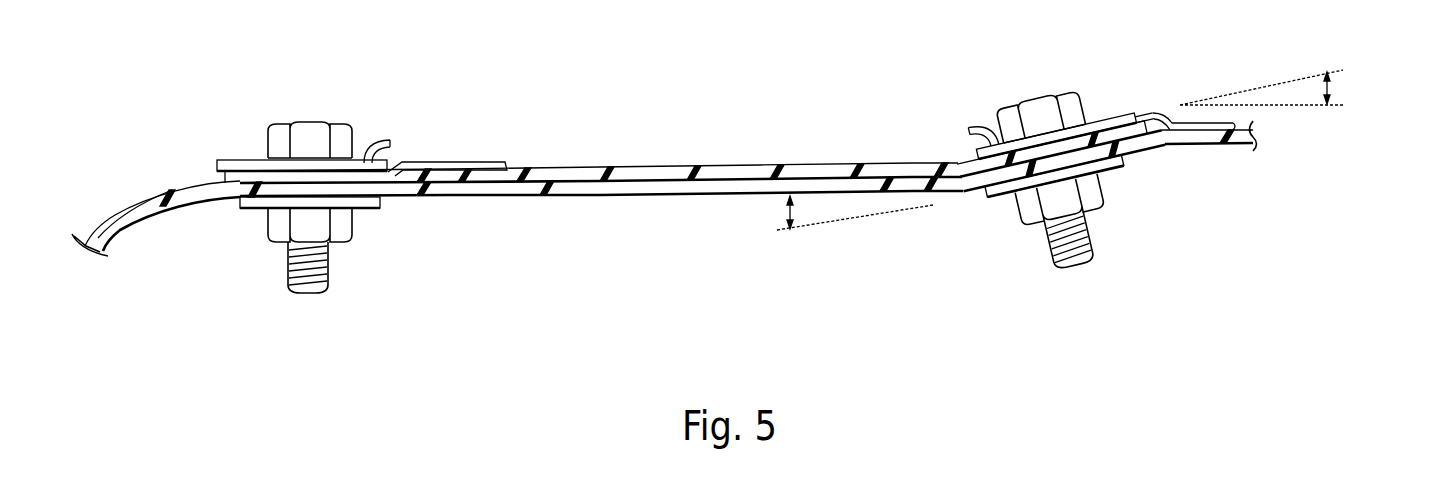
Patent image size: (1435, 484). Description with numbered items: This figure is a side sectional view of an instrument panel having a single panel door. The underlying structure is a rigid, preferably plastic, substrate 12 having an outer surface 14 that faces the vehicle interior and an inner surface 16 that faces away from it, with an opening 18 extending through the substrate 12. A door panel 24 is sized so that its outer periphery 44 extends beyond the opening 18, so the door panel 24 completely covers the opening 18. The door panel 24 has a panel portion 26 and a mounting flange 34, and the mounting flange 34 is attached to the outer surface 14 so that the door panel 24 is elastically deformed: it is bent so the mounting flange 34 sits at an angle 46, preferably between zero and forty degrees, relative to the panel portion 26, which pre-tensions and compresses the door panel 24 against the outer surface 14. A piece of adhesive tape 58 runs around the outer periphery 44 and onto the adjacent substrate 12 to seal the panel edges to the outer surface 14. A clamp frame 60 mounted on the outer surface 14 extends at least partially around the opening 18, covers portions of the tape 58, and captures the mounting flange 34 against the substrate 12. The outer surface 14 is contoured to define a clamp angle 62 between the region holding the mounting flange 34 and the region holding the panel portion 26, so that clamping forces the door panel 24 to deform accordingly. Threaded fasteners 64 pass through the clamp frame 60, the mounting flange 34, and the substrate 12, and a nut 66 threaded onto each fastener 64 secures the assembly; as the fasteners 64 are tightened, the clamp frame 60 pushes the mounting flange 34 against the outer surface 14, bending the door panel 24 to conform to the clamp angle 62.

The substrate 12 is at (1187, 138).
The outer surface 14 is at (137, 192).
The inner surface 16 is at (133, 220).
The opening 18 is at (543, 187).
The door panel 24 is at (836, 156).
The panel portion 26 is at (713, 168).
The mounting flange 34 is at (1113, 137).
The outer periphery 44 is at (420, 170).
The angle 46 is at (773, 212).
The adhesive tape 58 is at (465, 160).
The clamp frame 60 is at (243, 163).
The clamp angle 62 is at (1328, 90).
The threaded fastener 64 is at (307, 132).
The nut 66 is at (280, 223).